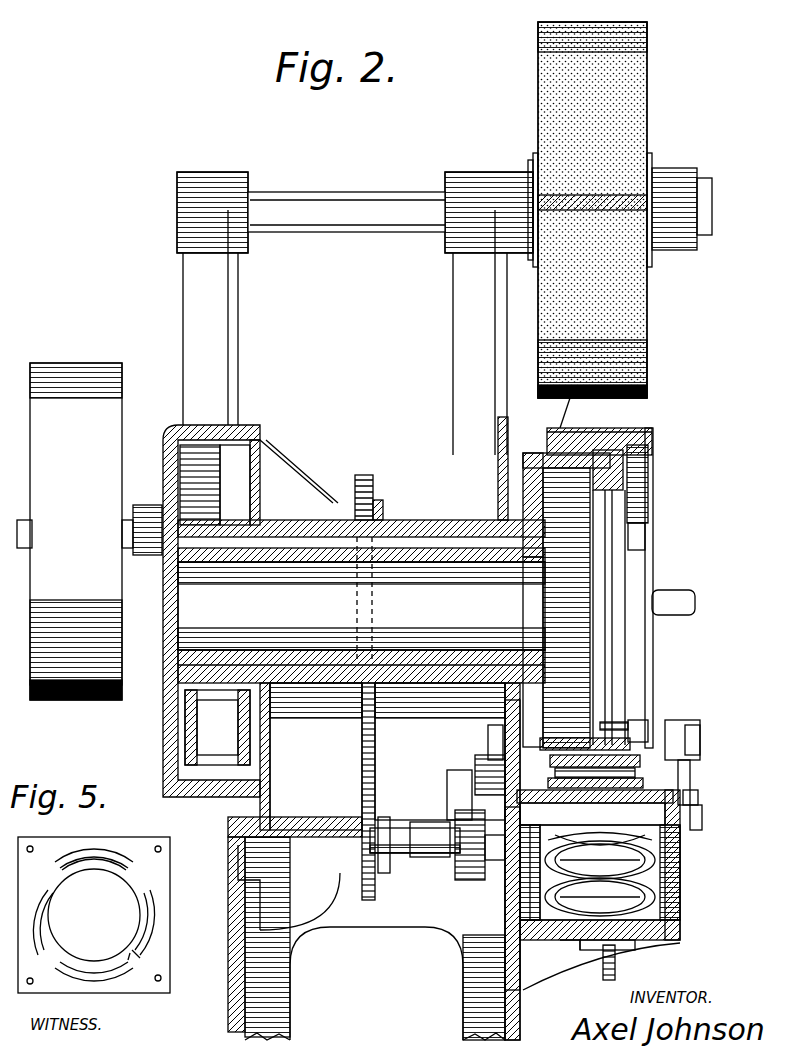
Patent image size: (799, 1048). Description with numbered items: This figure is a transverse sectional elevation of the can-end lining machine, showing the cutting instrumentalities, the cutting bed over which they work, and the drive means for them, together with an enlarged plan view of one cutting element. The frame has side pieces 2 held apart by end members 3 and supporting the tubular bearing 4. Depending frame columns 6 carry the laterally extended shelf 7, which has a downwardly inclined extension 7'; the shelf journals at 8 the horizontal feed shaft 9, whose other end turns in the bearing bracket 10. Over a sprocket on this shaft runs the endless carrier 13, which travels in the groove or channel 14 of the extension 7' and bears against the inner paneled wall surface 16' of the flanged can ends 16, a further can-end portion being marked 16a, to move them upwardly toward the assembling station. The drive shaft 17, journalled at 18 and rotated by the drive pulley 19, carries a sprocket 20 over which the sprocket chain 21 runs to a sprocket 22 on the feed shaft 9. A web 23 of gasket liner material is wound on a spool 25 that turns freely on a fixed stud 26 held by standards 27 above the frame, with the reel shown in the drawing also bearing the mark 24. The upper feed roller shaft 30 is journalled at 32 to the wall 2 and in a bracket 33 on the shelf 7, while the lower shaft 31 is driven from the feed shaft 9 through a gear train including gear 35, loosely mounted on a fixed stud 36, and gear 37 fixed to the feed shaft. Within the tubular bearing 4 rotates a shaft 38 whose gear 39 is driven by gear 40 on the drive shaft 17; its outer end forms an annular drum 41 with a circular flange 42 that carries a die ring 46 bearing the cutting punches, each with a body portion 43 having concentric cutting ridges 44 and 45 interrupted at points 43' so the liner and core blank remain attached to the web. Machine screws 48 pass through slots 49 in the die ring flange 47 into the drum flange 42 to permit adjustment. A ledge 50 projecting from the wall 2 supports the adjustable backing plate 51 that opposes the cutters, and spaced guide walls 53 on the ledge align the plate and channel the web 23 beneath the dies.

In FIG. 2, the side pieces 2 is at (270, 755).
In FIG. 2, the end members 3 is at (262, 790).
In FIG. 2, the tubular bearing 4 is at (440, 520).
In FIG. 2, the frame columns 6 is at (275, 985).
In FIG. 2, the shelf 7 is at (499, 845).
In FIG. 2, the inclined extension 7' is at (625, 890).
In FIG. 2, the journal 8 is at (500, 890).
In FIG. 2, the feed shaft 9 is at (410, 855).
In FIG. 2, the bearing bracket 10 is at (295, 924).
In FIG. 2, the endless carrier 13 is at (615, 960).
In FIG. 2, the groove or channel 14 is at (585, 945).
In FIG. 2, the flanged can ends 16 is at (600, 872).
In FIG. 2, the inner paneled wall surface 16' is at (657, 864).
In FIG. 2, the lens ring 16a is at (660, 895).
In FIG. 2, the drive shaft 17 is at (28, 520).
In FIG. 2, the journal 18 is at (150, 512).
In FIG. 2, the drive pulley 19 is at (76, 531).
In FIG. 2, the sprocket 20 is at (385, 500).
In FIG. 2, the sprocket chain 21 is at (362, 472).
In FIG. 2, the sprocket 22 is at (392, 822).
In FIG. 2, the web 23 is at (592, 210).
In FIG. 2, the wheel hub 24 is at (637, 322).
In FIG. 2, the spool 25 is at (533, 165).
In FIG. 2, the stud 26 is at (365, 200).
In FIG. 2, the standards or brackets 27 is at (238, 327).
In FIG. 2, the idler shaft 30 is at (700, 730).
In FIG. 2, the lower shaft 31 is at (702, 812).
In FIG. 2, the journal 32 is at (488, 740).
In FIG. 2, the bracket 33 is at (690, 722).
In FIG. 2, the gear 35 is at (450, 775).
In FIG. 2, the fixed stud 36 is at (427, 812).
In FIG. 2, the gear 37 is at (470, 880).
In FIG. 2, the shaft 38 is at (320, 545).
In FIG. 2, the gear 39 is at (190, 740).
In FIG. 2, the gear 40 is at (270, 450).
In FIG. 2, the annular drum 41 is at (530, 455).
In FIG. 2, the circular flange 42 is at (652, 465).
In FIG. 2, the body portion 43 is at (599, 572).
In FIG. 5, the body portion 43 is at (171, 960).
In FIG. 5, the interruptions 43' is at (148, 988).
In FIG. 2, the cutting ridge 44 is at (640, 425).
In FIG. 5, the cutting ridge 44 is at (90, 866).
In FIG. 2, the cutting ridge 45 is at (652, 428).
In FIG. 5, the cutting ridge 45 is at (160, 886).
In FIG. 2, the die ring 46 is at (648, 440).
In FIG. 2, the circular flange 47 is at (652, 482).
In FIG. 2, the machine screws 48 is at (645, 538).
In FIG. 2, the slots 49 is at (640, 720).
In FIG. 2, the ledge or supporting shelf 50 is at (595, 807).
In FIG. 2, the backing or die plate 51 is at (698, 795).
In FIG. 2, the guide walls 53 is at (690, 775).